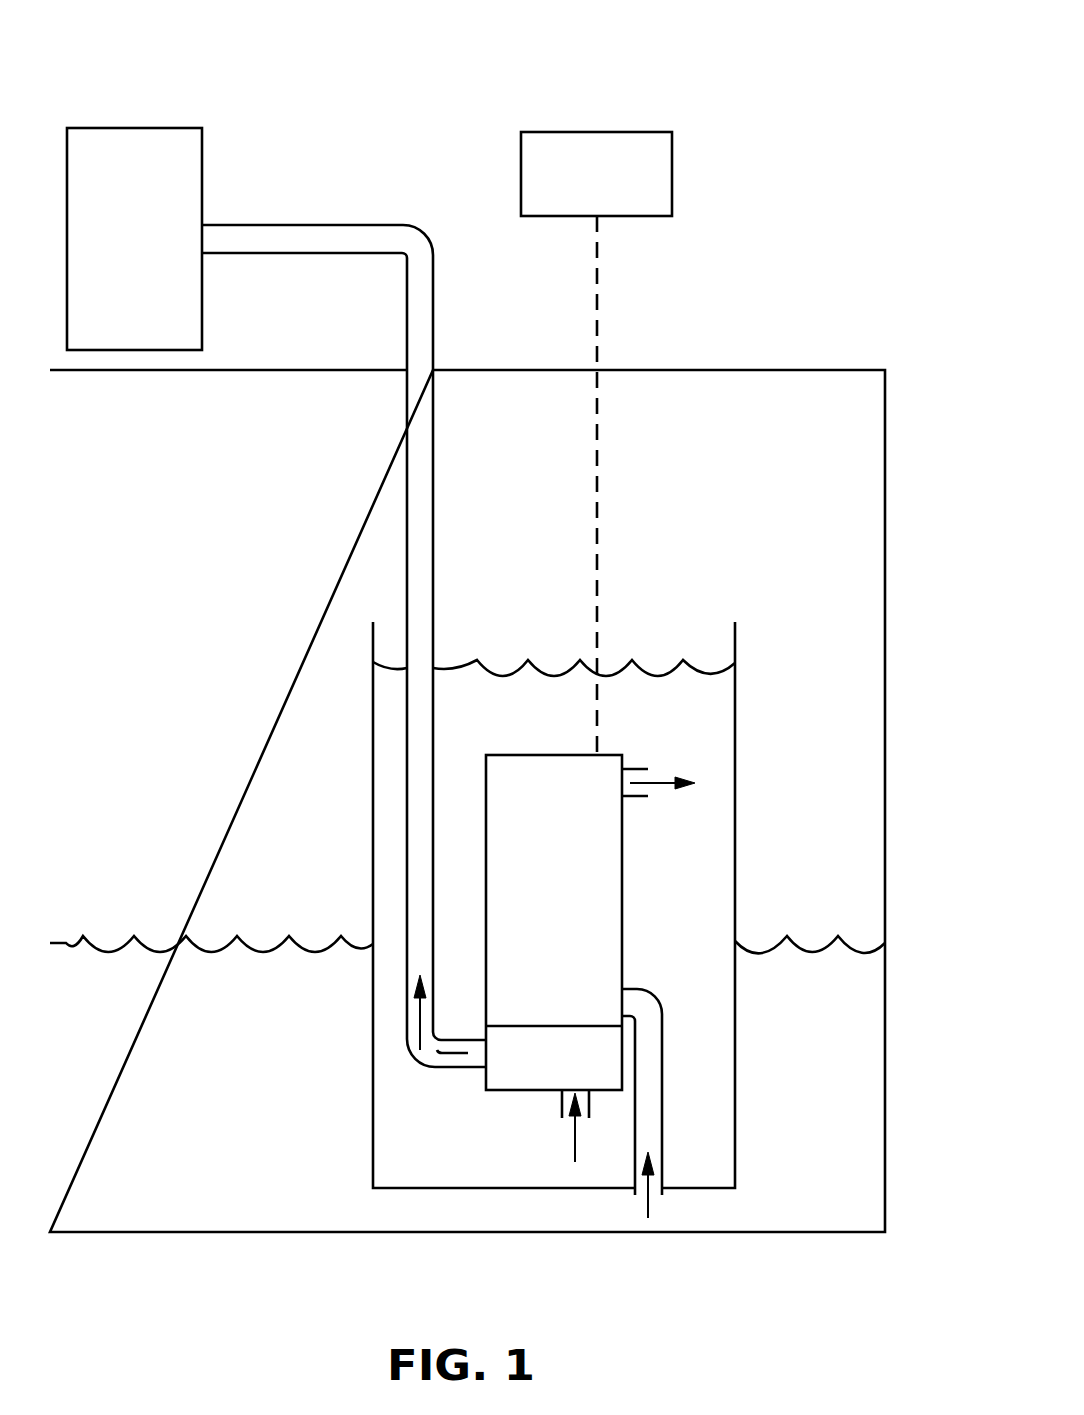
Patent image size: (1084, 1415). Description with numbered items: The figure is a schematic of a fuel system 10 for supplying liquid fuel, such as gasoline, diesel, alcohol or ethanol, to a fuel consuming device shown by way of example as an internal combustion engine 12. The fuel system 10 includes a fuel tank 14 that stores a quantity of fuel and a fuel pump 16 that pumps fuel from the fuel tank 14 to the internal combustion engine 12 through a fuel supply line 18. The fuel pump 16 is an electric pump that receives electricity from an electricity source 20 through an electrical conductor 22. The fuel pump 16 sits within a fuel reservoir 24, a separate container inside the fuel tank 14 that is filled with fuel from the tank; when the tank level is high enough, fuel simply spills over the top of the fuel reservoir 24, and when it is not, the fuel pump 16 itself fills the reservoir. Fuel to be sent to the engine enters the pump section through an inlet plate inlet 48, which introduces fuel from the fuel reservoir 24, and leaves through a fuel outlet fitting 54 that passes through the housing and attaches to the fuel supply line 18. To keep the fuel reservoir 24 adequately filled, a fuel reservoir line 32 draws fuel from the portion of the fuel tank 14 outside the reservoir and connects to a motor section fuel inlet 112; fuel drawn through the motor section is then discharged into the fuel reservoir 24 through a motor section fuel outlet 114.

The fuel system 10 is at (293, 82).
The internal combustion engine 12 is at (151, 252).
The fuel tank 14 is at (830, 370).
The fuel pump 16 is at (570, 941).
The fuel supply line 18 is at (335, 225).
The electricity source 20 is at (611, 183).
The electrical conductor 22 is at (597, 280).
The fuel reservoir 24 is at (373, 1093).
The fuel reservoir line 32 is at (662, 1140).
The inlet plate inlet 48 is at (560, 1105).
The fuel outlet fitting 54 is at (466, 1068).
The motor section fuel inlet 112 is at (627, 987).
The motor section fuel outlet 114 is at (627, 770).